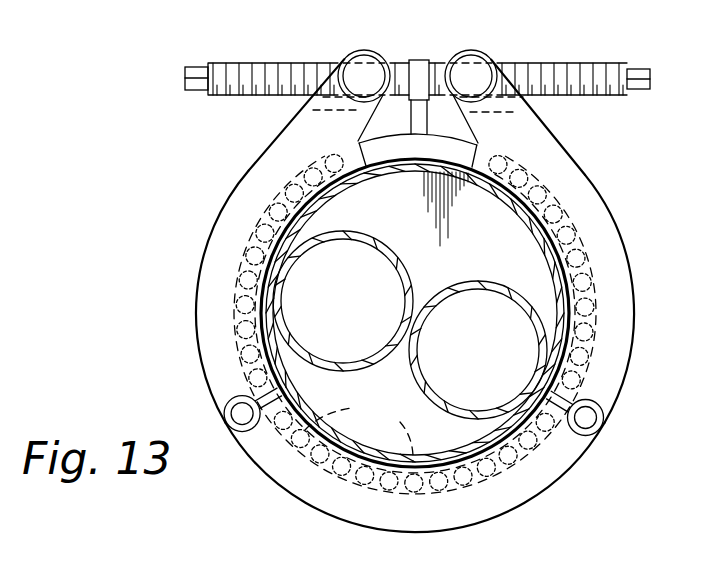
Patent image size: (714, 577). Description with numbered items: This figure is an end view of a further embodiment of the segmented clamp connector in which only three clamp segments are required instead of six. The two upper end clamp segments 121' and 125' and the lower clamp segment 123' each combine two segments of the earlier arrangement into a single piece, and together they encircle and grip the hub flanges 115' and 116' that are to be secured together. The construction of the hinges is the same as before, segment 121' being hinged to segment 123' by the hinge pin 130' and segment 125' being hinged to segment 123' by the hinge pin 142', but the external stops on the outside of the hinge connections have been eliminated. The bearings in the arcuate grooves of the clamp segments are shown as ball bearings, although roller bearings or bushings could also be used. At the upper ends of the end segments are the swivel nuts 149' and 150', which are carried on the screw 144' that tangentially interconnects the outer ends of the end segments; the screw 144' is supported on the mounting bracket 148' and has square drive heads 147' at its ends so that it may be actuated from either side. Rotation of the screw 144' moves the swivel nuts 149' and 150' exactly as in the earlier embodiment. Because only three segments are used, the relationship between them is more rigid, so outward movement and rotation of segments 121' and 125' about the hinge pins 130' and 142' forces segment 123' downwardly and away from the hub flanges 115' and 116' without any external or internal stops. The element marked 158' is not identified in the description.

The hub flange 115' is at (415, 303).
The hub flange 116' is at (418, 131).
The clamp segment 121' is at (245, 240).
The clamp segment 123' is at (414, 495).
The clamp segment 125' is at (584, 241).
The hinge pin 130' is at (220, 410).
The hinge pin 142' is at (606, 421).
The threaded adjusting rod 144' is at (417, 53).
The rod end 147' is at (419, 50).
The center block 148' is at (413, 68).
The eye 149' is at (350, 53).
The eye 150' is at (505, 57).
The hidden bore 158' is at (359, 432).